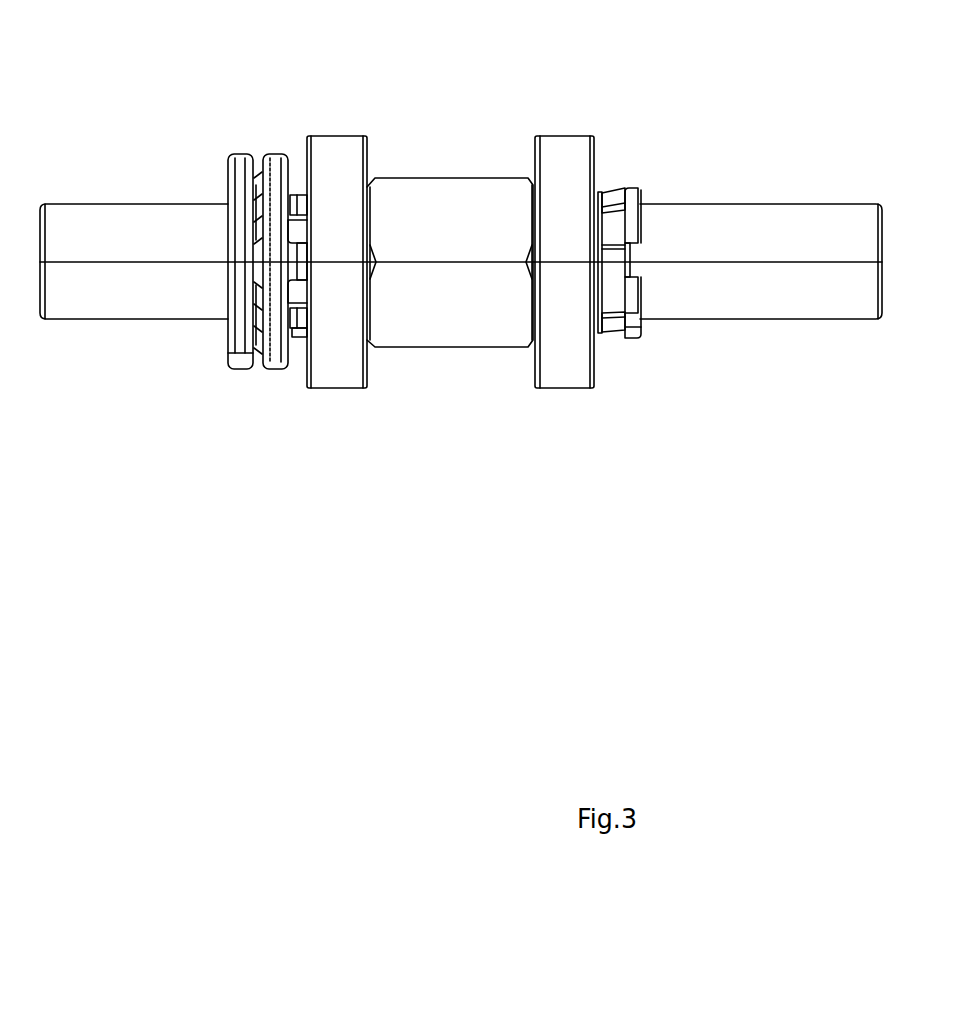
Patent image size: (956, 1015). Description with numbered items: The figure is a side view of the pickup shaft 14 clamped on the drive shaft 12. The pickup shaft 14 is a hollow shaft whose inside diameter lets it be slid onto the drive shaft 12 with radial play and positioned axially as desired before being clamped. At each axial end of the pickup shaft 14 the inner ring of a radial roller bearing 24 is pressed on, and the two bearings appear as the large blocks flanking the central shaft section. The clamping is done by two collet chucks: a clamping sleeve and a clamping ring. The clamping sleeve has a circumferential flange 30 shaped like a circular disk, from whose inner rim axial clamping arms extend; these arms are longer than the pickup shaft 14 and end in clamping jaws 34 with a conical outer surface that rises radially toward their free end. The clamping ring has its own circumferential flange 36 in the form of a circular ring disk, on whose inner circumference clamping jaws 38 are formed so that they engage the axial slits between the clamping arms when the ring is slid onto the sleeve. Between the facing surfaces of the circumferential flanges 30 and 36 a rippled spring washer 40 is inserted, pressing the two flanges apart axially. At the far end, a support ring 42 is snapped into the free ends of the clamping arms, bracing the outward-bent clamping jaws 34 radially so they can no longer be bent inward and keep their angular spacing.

The drive shaft 12 is at (763, 230).
The pickup shaft 14 is at (440, 212).
The radial roller bearing 24 is at (347, 160).
The circumferential flange 30 is at (243, 345).
The clamping jaws 34 is at (603, 222).
The circumferential flange 36 is at (283, 370).
The clamping jaws 38 is at (290, 162).
The rippled spring washer 40 is at (260, 340).
The support ring 42 is at (637, 263).